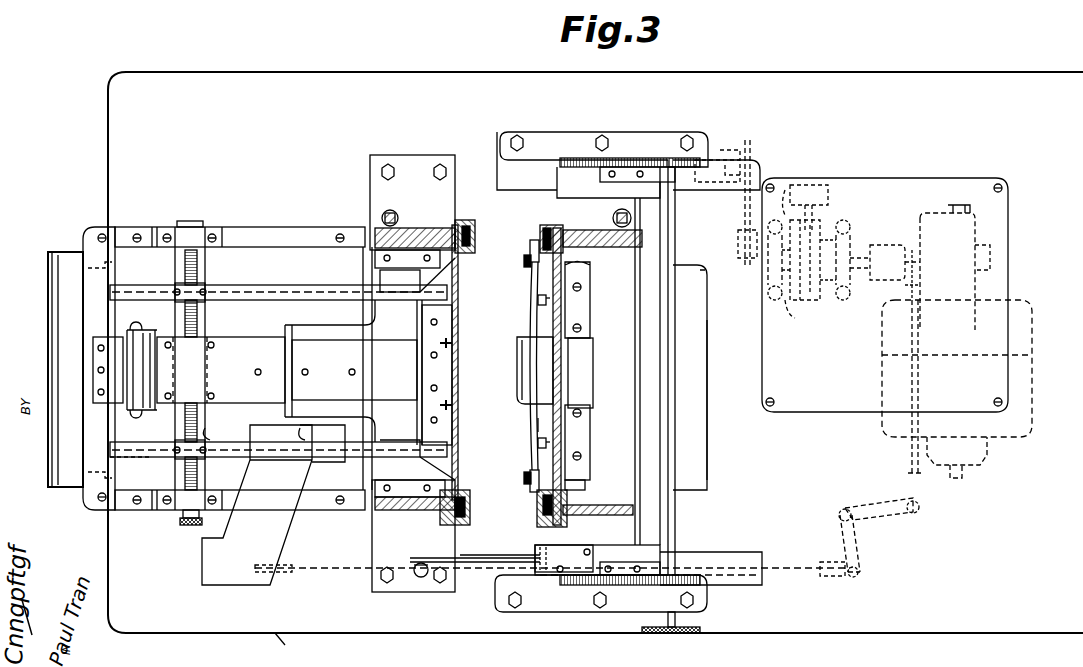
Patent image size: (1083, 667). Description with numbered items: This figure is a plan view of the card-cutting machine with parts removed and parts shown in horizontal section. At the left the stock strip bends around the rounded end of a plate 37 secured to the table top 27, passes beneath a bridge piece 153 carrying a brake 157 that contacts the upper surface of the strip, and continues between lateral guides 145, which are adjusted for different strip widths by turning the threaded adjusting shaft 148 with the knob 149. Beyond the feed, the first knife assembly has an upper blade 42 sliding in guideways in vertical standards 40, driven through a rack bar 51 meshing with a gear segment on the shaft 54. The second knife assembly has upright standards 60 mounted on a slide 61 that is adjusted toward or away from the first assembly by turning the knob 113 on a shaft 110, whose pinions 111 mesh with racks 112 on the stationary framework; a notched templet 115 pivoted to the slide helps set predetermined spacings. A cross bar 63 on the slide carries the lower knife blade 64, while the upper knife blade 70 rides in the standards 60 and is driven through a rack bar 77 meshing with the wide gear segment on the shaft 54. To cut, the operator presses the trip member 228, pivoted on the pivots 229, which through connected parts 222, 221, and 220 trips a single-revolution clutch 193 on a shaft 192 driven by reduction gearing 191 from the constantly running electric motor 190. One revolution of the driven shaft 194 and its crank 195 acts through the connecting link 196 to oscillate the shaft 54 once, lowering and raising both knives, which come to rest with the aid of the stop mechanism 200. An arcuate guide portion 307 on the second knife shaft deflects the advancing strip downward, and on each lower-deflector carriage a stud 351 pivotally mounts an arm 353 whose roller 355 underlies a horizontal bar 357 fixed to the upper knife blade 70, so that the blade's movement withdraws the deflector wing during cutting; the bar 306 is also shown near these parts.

The top 27 is at (287, 648).
The plate 37 is at (50, 387).
The vertical standards 40 is at (418, 232).
The upper blade 42 is at (460, 305).
The rack bar 51 is at (393, 210).
The shaft 54 is at (708, 165).
The upright standards 60 is at (605, 505).
The slide 61 is at (597, 555).
The cross bar 63 is at (630, 335).
The lower knife blade 64 is at (590, 300).
The upper knife blade 70 is at (583, 434).
The rack bar 77 is at (615, 213).
The shaft 110 is at (705, 455).
The pinions 111 is at (672, 135).
The racks 112 is at (612, 160).
The knob 113 is at (700, 627).
The notched templet 115 is at (428, 556).
The lateral guides 145 is at (290, 280).
The threaded adjusting shaft 148 is at (195, 372).
The knob 149 is at (182, 527).
The bridge piece 153 is at (152, 463).
The brake 157 is at (152, 403).
The electric motor 190 is at (1028, 395).
The reduction gearing 191 is at (968, 236).
The shaft 192 is at (905, 290).
The single-revolution clutch 193 is at (878, 240).
The driven shaft 194 is at (808, 323).
The crank 195 is at (755, 268).
The connecting link 196 is at (742, 200).
The stop mechanism 200 is at (795, 185).
The connected part 220 is at (920, 398).
The connected part 221 is at (898, 520).
The connected part 222 is at (335, 580).
The trip member 228 is at (275, 548).
The pivots 229 is at (230, 422).
The clamp bar 306 is at (596, 370).
The arcuate portion 307 is at (515, 342).
The stud 351 is at (524, 263).
The arm 353 is at (530, 247).
The roller 355 is at (538, 298).
The horizontal bar 357 is at (536, 420).